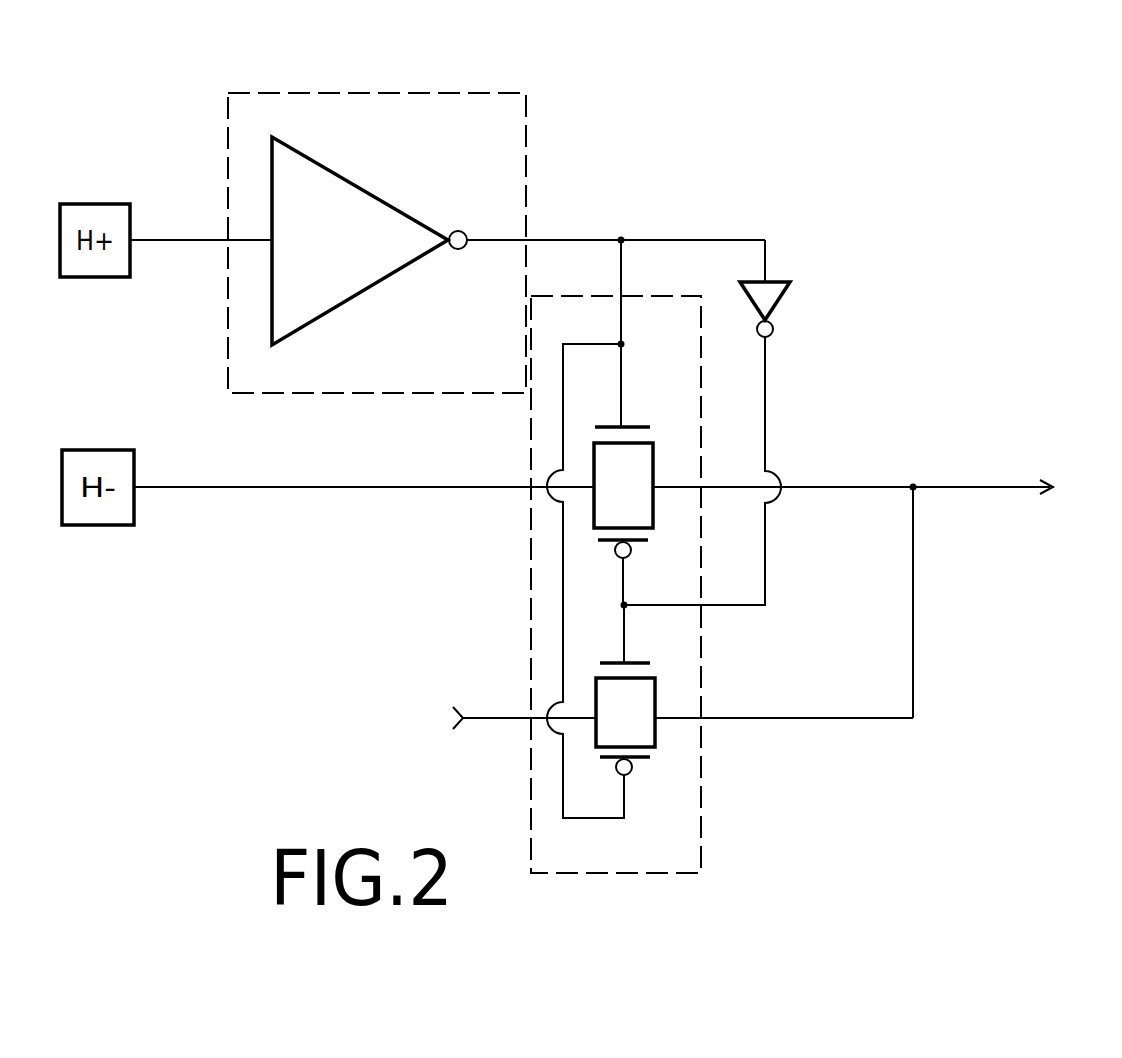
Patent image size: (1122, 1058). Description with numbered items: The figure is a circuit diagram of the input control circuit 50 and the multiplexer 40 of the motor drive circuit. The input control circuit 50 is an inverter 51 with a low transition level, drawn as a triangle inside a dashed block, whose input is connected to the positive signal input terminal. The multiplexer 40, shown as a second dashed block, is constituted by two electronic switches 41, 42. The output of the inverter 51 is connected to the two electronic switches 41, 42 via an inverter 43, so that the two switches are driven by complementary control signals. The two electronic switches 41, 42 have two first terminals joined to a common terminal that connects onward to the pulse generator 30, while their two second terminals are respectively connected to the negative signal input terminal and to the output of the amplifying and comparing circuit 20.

The input control circuit 50 is at (377, 205).
The inverter 51 is at (378, 276).
The multiplexer 40 is at (575, 584).
The electronic switch 41 is at (647, 501).
The electronic switch 42 is at (615, 690).
The inverter 43 is at (781, 311).
The pulse generator 30 is at (867, 599).
The amplifying and comparing circuit 20 is at (627, 749).